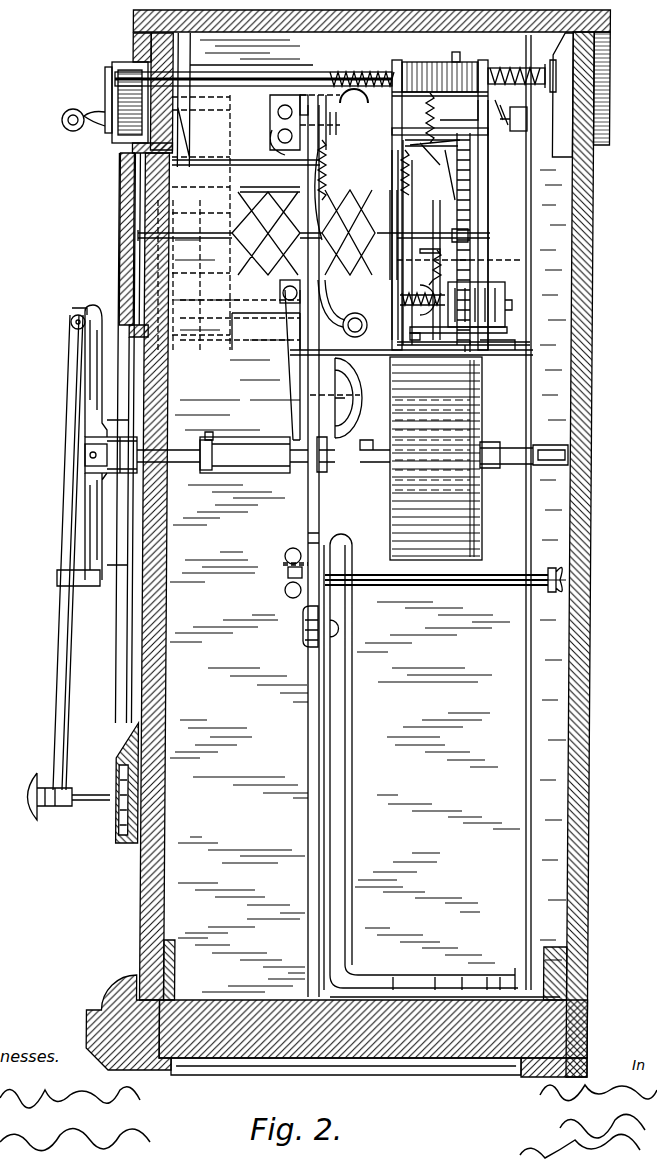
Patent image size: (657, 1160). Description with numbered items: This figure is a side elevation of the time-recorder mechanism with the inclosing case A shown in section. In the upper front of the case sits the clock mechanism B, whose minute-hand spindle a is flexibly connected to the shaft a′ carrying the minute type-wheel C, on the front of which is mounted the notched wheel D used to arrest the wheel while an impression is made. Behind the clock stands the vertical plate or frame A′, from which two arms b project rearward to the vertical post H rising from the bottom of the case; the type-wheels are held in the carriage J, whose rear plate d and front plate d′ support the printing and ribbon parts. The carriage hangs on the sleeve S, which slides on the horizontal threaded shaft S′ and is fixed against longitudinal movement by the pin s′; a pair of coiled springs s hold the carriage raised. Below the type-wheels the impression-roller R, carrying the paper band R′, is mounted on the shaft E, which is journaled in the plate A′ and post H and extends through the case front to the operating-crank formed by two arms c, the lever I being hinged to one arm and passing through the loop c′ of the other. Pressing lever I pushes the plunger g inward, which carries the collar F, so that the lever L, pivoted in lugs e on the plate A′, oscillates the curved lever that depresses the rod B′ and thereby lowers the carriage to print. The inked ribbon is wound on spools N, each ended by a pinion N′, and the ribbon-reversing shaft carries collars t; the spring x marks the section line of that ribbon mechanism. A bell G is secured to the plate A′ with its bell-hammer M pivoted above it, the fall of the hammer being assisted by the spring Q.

The inclosing case A is at (590, 224).
The vertical metal plate or frame A′ is at (308, 514).
The threaded shaft S′ is at (332, 70).
The sleeve S is at (440, 196).
The pin s′ is at (462, 55).
The coiled springs s is at (435, 118).
The clock mechanism B is at (192, 350).
The rod B′ is at (378, 104).
The arms b is at (355, 128).
The roller f is at (276, 140).
The upper roller f′ is at (277, 112).
The carriage J is at (370, 174).
The spring Q is at (330, 172).
The vertical post H is at (562, 255).
The front plate d′ is at (404, 144).
The vertical plate d is at (500, 218).
The loop c′ is at (440, 172).
The arms c is at (101, 340).
The wheel D is at (420, 242).
The type-wheel C is at (472, 178).
The minute-hand spindle a is at (218, 238).
The shaft a′ is at (437, 232).
The line x x is at (390, 264).
The spools N is at (506, 300).
The pinion N′ is at (421, 300).
The collars t is at (510, 335).
The lugs e is at (280, 300).
The bell-hammer M is at (347, 308).
The lever L is at (283, 352).
The bell G is at (356, 398).
The shaft E is at (342, 466).
The collar F is at (258, 440).
The plunger g is at (72, 458).
The impression-roller R is at (482, 527).
The record-receiving band R′ is at (392, 518).
The lever I is at (70, 395).
The handle I′ is at (98, 796).